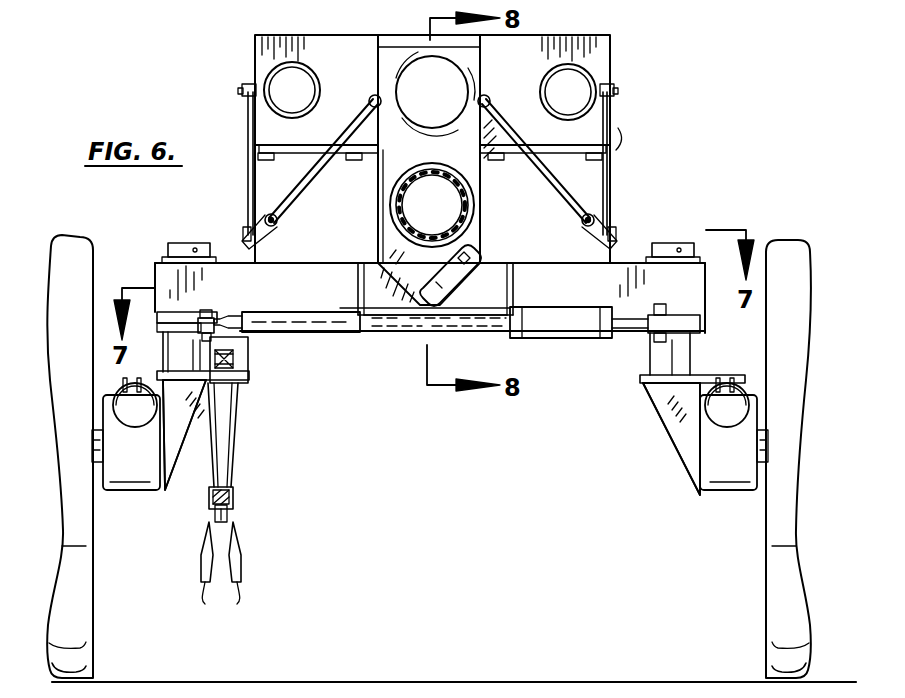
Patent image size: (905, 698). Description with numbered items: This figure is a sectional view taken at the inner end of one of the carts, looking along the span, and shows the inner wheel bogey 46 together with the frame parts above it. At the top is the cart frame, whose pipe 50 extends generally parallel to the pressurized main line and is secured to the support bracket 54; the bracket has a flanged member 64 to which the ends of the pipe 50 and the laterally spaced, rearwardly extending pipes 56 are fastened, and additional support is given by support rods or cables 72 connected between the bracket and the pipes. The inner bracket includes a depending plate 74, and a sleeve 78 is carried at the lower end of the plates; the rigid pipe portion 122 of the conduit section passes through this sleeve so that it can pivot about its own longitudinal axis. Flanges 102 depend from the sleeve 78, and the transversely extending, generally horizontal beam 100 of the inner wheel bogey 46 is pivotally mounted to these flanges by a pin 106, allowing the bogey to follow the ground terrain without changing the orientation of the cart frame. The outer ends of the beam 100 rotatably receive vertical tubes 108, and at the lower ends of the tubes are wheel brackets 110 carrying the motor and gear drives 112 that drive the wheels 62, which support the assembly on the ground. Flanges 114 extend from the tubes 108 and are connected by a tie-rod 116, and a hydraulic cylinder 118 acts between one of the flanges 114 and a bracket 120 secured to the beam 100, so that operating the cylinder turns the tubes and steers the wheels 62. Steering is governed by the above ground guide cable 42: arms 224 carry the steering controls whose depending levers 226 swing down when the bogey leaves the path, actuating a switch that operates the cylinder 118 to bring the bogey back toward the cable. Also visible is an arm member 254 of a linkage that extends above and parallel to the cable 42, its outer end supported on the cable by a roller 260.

The guide cable 42 is at (232, 528).
The inner wheel bogey 46 is at (676, 196).
The pipe 50 is at (408, 76).
The support bracket 54 is at (611, 38).
The pipes 56 is at (596, 84).
The wheels 62 is at (92, 612).
The flanged member 64 is at (336, 44).
The support rods or cables 72 is at (296, 190).
The plate 74 is at (478, 68).
The sleeve 78 is at (392, 186).
The beam 100 is at (312, 300).
The flanges 102 is at (478, 246).
The pin 106 is at (428, 300).
The vertical tubes 108 is at (198, 368).
The wheel brackets 110 is at (186, 460).
The motor and gear drives 112 is at (126, 486).
The flanges 114 is at (194, 326).
The tie-rod 116 is at (348, 328).
The hydraulic cylinder 118 is at (556, 334).
The bracket 120 is at (422, 332).
The rigid pipe portion 122 is at (402, 196).
The arms 224 is at (236, 352).
The depending levers 226 is at (220, 569).
The arm member 254 is at (232, 496).
The roller 260 is at (208, 522).